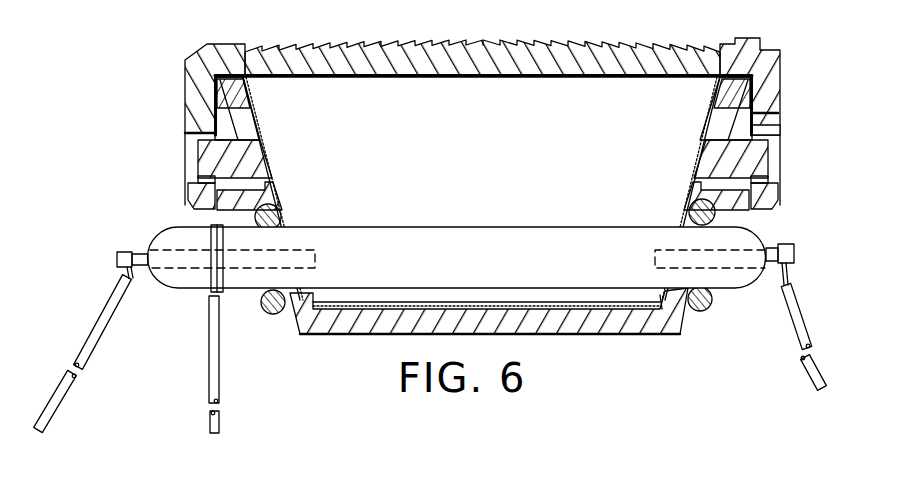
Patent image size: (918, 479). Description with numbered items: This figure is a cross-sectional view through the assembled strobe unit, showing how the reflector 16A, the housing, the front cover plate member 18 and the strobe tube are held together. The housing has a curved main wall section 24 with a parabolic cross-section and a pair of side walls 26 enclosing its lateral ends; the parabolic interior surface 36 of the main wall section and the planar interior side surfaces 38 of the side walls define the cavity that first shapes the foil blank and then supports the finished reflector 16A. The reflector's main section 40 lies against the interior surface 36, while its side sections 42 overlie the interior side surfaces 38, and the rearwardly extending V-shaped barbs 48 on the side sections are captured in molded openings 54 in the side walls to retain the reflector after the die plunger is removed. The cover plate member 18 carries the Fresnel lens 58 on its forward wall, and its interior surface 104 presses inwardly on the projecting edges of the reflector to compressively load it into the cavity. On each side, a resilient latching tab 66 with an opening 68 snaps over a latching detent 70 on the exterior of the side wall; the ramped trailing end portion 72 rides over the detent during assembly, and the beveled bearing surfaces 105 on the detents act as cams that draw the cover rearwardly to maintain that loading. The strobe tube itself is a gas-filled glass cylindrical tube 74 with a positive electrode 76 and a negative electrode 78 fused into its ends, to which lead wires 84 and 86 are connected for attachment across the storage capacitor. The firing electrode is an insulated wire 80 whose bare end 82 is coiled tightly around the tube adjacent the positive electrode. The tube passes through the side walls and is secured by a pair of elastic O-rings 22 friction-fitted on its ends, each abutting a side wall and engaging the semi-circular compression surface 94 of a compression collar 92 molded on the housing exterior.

The reflector 16A is at (650, 298).
The front cover plate member 18 is at (778, 41).
The elastic O-rings 22 is at (279, 218).
The main wall section 24 is at (335, 333).
The side walls 26 is at (235, 86).
The parabolic interior surface 36 is at (580, 318).
The interior side surfaces 38 is at (213, 85).
The main section 40 is at (378, 303).
The side sections 42 is at (268, 150).
The V-shaped barbs 48 is at (249, 130).
The openings 54 is at (240, 118).
The Fresnel lens 58 is at (377, 44).
The latching tab 66 is at (197, 126).
The opening 68 is at (779, 132).
The latching detent 70 is at (223, 153).
The ramped trailing end portion 72 is at (195, 203).
The glass cylindrical tube 74 is at (504, 229).
The positive electrode 76 is at (145, 251).
The negative electrode 78 is at (772, 244).
The insulated wire 80 is at (209, 333).
The bare end 82 is at (212, 272).
The lead wire 84 is at (103, 309).
The lead wire 86 is at (802, 308).
The semi-circular compression collars 92 is at (263, 202).
The semi-circular compression surface 94 is at (257, 212).
The interior surface 104 is at (386, 78).
The beveled bearing surfaces 105 is at (203, 180).